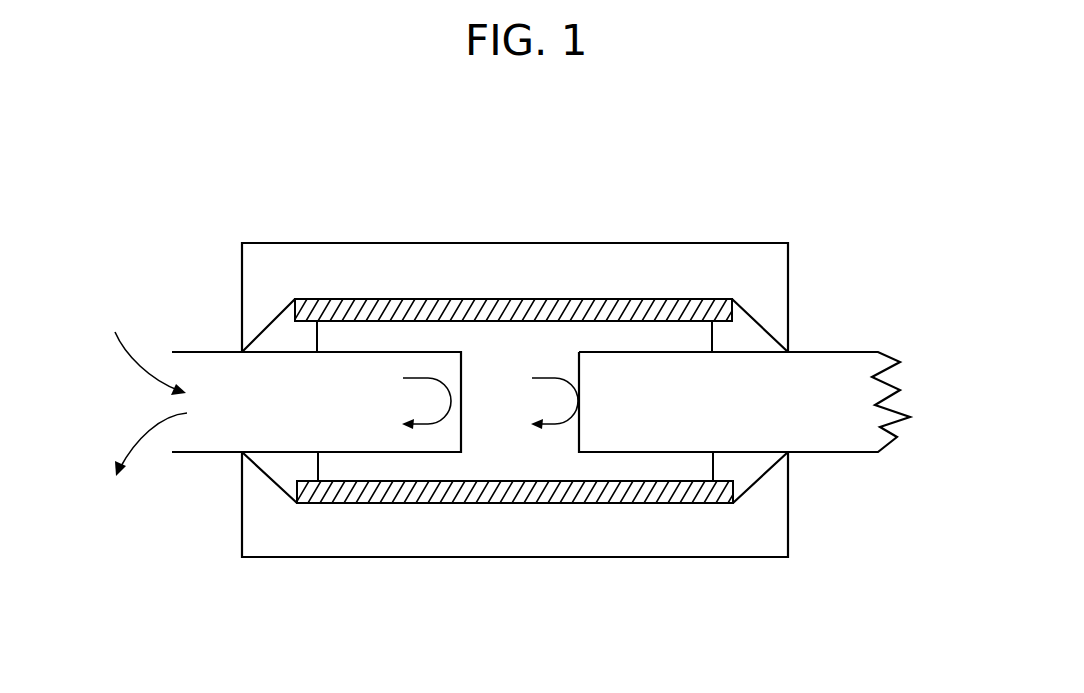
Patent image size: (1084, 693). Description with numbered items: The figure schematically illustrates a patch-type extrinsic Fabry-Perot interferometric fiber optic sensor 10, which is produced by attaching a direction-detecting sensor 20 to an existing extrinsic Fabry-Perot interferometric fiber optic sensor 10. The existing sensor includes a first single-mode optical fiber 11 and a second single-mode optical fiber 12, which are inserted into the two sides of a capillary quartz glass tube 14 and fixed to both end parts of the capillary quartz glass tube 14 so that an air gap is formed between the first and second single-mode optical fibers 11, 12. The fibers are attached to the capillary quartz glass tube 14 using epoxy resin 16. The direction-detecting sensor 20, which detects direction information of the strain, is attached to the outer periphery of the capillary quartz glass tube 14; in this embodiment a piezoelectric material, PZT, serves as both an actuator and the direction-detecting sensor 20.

The extrinsic Fabry-Perot interferometric fiber optic sensor 10 is at (432, 503).
The first single-mode optical fiber 11 is at (200, 352).
The second single-mode optical fiber 12 is at (837, 352).
The capillary quartz glass tube 14 is at (703, 293).
The epoxy resin 16 is at (285, 333).
The direction-detecting sensor 20 is at (472, 267).